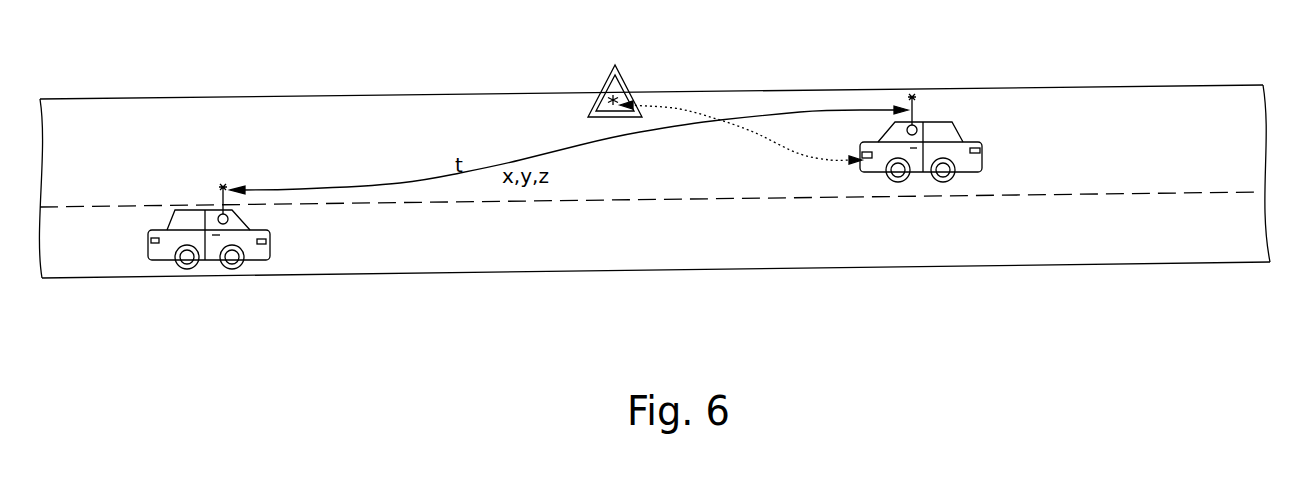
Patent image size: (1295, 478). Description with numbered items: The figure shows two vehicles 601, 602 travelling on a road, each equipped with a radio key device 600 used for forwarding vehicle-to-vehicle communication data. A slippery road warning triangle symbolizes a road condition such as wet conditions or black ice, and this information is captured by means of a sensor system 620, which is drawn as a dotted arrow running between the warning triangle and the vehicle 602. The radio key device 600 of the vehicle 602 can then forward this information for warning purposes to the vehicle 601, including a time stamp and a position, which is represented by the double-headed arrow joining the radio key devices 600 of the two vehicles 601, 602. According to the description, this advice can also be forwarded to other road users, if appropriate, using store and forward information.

The radio key device 600 is at (223, 207).
The vehicle 601 is at (183, 215).
The vehicle 602 is at (953, 120).
The sensor system 620 is at (860, 157).